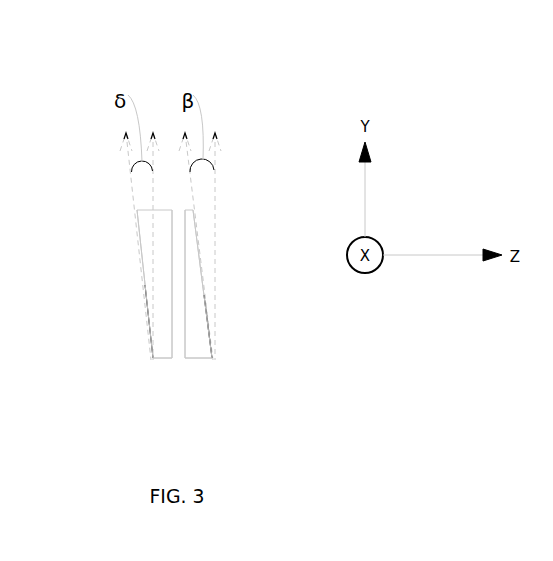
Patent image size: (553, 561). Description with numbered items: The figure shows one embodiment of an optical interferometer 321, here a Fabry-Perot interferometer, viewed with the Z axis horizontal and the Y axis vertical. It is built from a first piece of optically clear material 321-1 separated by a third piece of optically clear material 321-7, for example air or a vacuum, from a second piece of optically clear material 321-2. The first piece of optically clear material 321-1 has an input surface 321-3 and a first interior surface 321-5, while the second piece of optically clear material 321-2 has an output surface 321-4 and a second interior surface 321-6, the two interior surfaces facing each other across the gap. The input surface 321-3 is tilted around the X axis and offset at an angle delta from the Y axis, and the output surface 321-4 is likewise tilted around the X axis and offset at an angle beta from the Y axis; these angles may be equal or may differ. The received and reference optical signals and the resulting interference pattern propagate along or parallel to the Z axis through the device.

The optical interferometer 321 is at (142, 30).
The first piece of optically clear material 321-1 is at (158, 360).
The second piece of optically clear material 321-2 is at (208, 360).
The input surface 321-3 is at (138, 260).
The output surface 321-4 is at (205, 282).
The first interior surface 321-5 is at (172, 232).
The second interior surface 321-6 is at (185, 338).
The third piece of optically clear material 321-7 is at (178, 355).